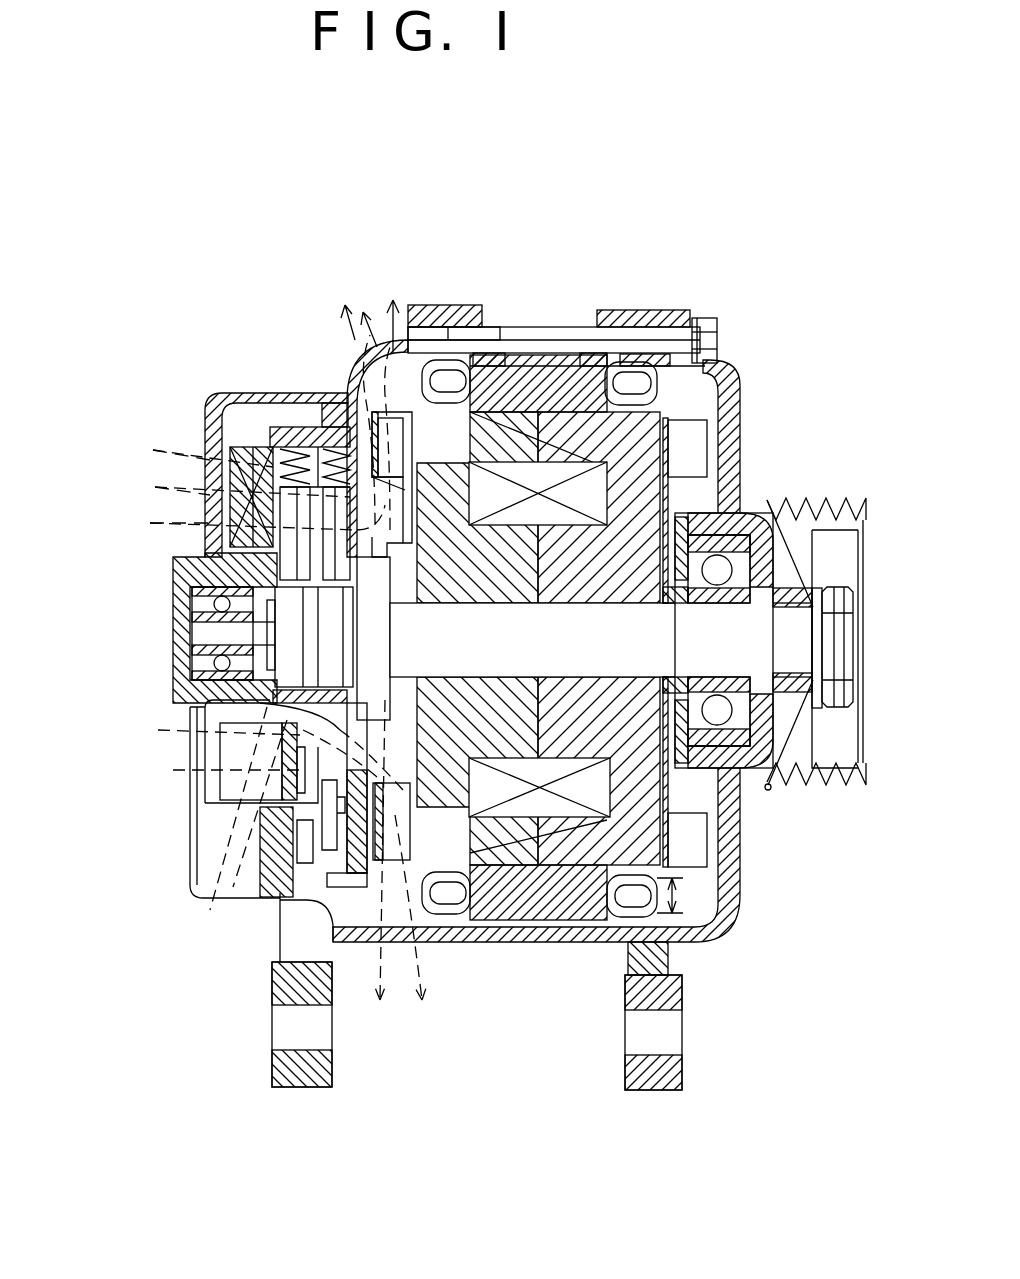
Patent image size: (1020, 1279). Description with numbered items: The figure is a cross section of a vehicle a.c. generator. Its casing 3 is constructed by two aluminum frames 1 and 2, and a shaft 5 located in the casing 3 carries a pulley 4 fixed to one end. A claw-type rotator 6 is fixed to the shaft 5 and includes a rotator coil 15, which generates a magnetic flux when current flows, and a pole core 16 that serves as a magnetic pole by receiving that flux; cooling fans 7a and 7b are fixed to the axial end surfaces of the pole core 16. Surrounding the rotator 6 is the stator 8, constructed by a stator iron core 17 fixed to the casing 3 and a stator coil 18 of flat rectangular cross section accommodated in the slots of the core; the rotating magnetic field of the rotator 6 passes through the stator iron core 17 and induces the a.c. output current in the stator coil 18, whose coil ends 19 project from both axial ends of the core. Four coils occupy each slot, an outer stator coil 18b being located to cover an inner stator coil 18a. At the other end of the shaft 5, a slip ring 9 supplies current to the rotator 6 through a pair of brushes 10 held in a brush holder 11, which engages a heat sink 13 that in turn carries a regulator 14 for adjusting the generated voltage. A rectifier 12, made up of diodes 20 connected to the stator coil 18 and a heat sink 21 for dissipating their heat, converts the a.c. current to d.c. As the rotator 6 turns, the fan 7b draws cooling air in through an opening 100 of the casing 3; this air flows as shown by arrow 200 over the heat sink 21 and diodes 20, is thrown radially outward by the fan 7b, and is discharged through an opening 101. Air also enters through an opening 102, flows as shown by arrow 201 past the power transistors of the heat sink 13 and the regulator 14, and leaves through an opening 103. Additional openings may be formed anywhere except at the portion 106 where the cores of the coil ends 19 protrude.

The frame 1 is at (737, 860).
The frame 2 is at (245, 880).
The casing 3 is at (740, 920).
The pulley 4 is at (832, 560).
The shaft 5 is at (787, 647).
The rotator 6 is at (538, 743).
The fan 7a is at (688, 427).
The fan 7b is at (385, 385).
The stator 8 is at (562, 718).
The slip ring 9 is at (290, 635).
The brushes 10 is at (293, 510).
The brush holder 11 is at (317, 437).
The rectifier 12 is at (295, 765).
The heat sink 13 is at (213, 423).
The regulator 14 is at (240, 460).
The rotator coil 15 is at (527, 802).
The pole core 16 is at (548, 790).
The stator iron core 17 is at (525, 355).
The stator coil 18 is at (620, 609).
The inner stator coil 18a is at (665, 925).
The outer stator coil 18b is at (680, 935).
The coil ends 19 is at (660, 375).
The diodes 20 is at (262, 712).
The heat sink 21 is at (300, 830).
The opening 100 is at (195, 847).
The opening 101 is at (435, 907).
The opening 102 is at (210, 455).
The opening 103 is at (397, 355).
The portion 106 is at (688, 895).
The arrow 200 is at (363, 850).
The arrow 201 is at (271, 432).